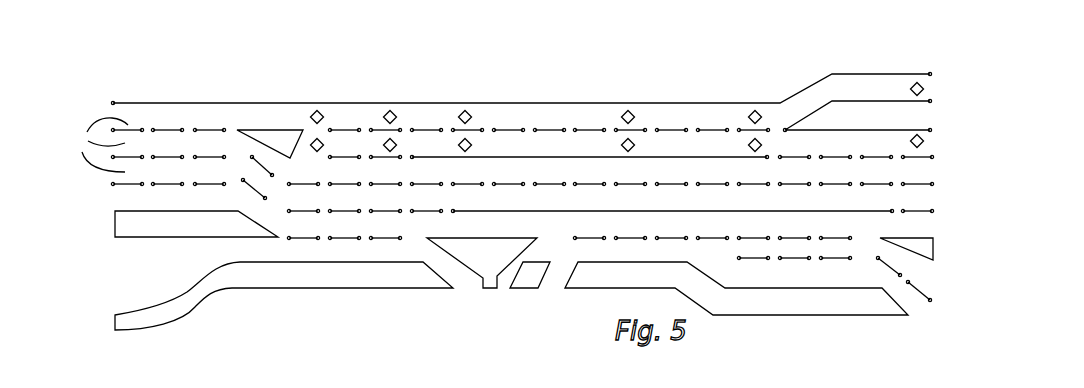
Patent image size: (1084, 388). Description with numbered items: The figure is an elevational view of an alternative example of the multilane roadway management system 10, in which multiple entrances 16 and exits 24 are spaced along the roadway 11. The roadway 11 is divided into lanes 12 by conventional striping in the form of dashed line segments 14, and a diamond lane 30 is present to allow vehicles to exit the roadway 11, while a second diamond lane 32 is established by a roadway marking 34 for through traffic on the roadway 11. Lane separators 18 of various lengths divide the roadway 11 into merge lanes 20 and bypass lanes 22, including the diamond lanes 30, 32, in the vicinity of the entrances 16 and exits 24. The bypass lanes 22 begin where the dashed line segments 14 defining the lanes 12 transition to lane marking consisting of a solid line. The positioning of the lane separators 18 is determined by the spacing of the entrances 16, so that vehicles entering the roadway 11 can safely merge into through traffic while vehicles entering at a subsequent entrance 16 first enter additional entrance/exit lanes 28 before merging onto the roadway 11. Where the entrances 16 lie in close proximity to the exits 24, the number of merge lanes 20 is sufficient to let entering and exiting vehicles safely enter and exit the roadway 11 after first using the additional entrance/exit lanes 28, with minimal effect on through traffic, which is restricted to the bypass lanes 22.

The multilane roadway management system 10 is at (347, 80).
The roadway 11 is at (212, 103).
The lanes 12 is at (96, 145).
The dashed line segments 14 is at (175, 130).
The entrances 16 is at (255, 258).
The lane separators 18 is at (585, 157).
The merge lanes 20 is at (610, 253).
The bypass lanes 22 is at (522, 200).
The exits 24 is at (472, 280).
The additional entrance/exit lanes 28 is at (483, 287).
The diamond lane 30 is at (621, 107).
The diamond lane 32 is at (522, 156).
The roadway marking 34 is at (276, 138).